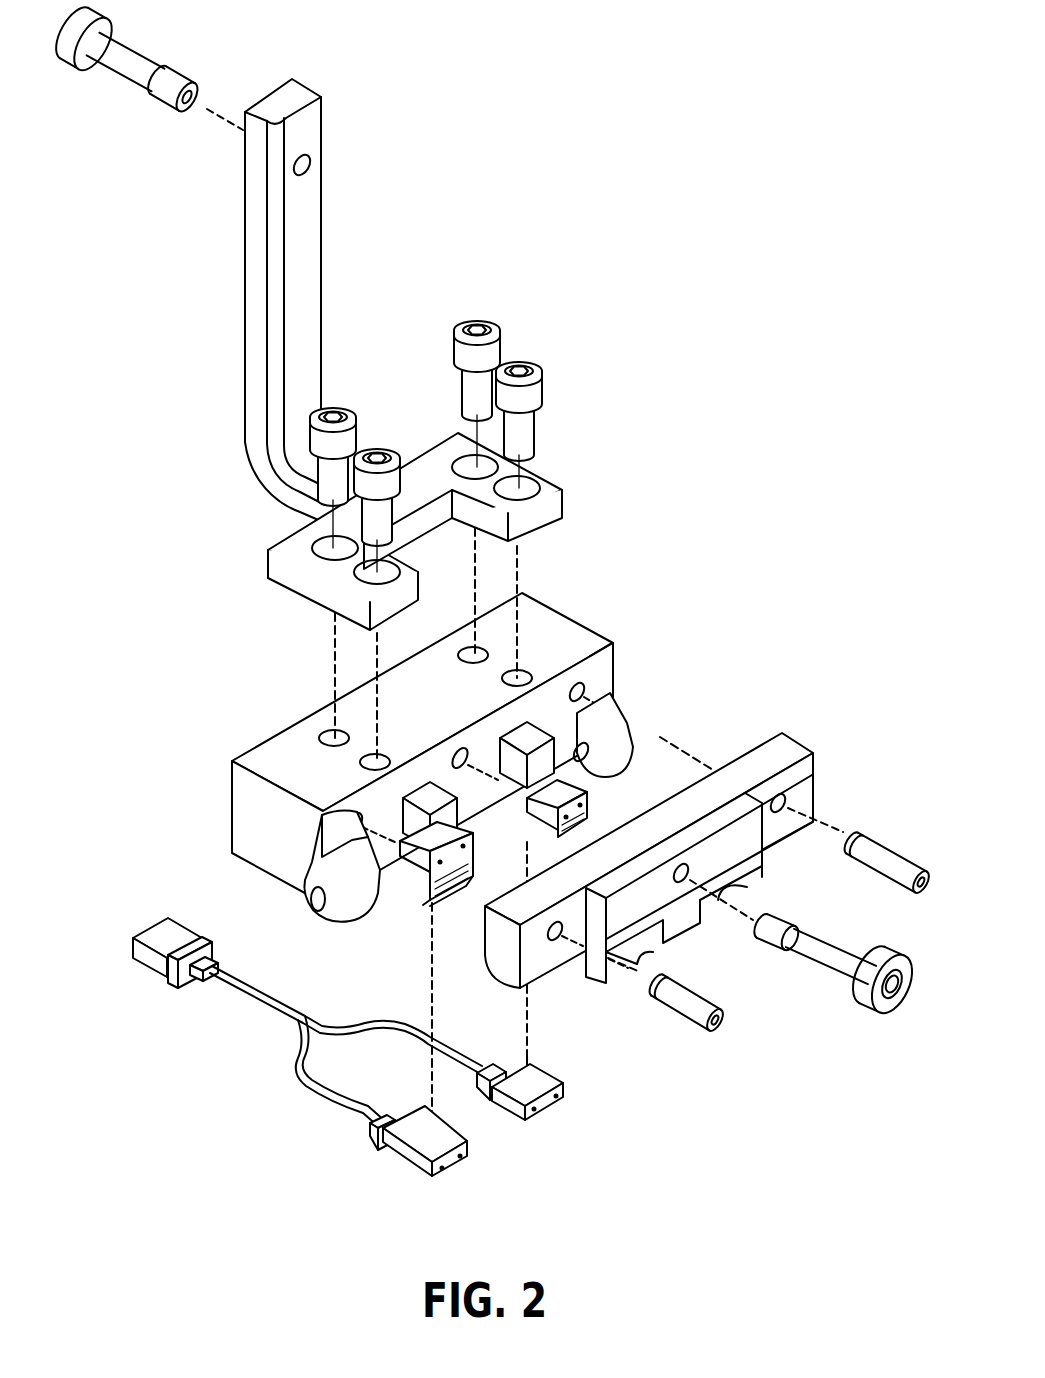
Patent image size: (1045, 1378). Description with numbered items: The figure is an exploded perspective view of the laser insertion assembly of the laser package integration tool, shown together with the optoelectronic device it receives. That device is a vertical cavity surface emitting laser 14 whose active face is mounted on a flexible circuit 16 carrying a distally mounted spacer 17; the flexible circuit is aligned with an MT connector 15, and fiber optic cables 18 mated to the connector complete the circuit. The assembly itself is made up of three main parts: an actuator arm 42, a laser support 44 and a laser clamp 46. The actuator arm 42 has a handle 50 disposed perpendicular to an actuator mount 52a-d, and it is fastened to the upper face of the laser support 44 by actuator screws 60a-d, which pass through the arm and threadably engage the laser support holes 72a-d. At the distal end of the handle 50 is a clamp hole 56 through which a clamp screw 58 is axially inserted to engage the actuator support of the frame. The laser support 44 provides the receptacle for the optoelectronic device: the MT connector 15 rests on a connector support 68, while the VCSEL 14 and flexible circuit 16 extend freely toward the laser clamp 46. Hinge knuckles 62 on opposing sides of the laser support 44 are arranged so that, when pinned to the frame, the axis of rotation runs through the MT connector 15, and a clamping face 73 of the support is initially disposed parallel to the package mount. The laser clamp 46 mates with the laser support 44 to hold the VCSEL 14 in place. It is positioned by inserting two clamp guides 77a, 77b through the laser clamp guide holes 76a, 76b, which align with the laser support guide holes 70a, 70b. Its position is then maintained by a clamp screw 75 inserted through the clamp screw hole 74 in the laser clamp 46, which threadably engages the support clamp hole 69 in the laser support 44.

The vertical cavity surface emitting laser 14 is at (428, 864).
The MT connector 15 is at (428, 1176).
The flexible circuit 16 is at (443, 904).
The spacer 17 is at (423, 900).
The fiber optic cables 18 is at (301, 1080).
The actuator arm 42 is at (372, 319).
The laser support 44 is at (570, 644).
The laser clamp 46 is at (779, 757).
The handle 50 is at (301, 243).
The actuator mount 52a-d is at (562, 491).
The clamp hole 56 is at (310, 165).
The clamp screw 58 is at (124, 59).
The actuator screws 60a-d is at (473, 326).
The hinge knuckles 62 is at (312, 918).
The connector support 68 is at (409, 818).
The support clamp hole 69 is at (457, 747).
The laser support guide hole 70a is at (584, 692).
The laser support guide hole 70b is at (347, 813).
The laser support holes 72a-d is at (523, 672).
The clamping face 73 is at (600, 670).
The clamp screw hole 74 is at (680, 866).
The clamp screw 75 is at (863, 984).
The laser clamp guide hole 76a is at (783, 798).
The laser clamp guide hole 76b is at (551, 942).
The clamp guide 77a is at (870, 849).
The clamp guide 77b is at (686, 1012).